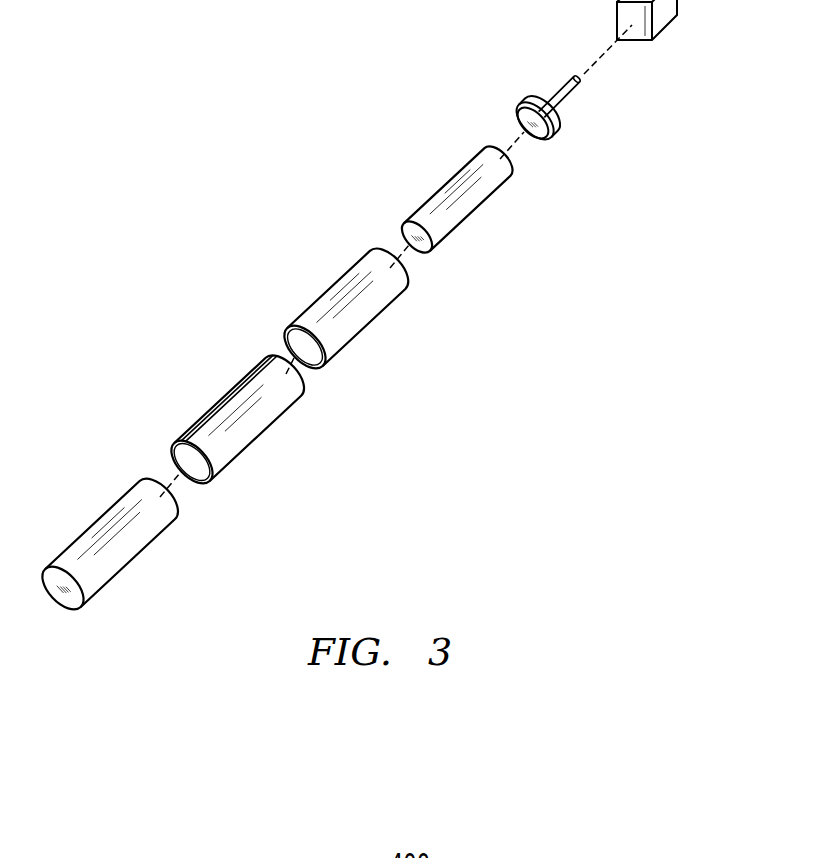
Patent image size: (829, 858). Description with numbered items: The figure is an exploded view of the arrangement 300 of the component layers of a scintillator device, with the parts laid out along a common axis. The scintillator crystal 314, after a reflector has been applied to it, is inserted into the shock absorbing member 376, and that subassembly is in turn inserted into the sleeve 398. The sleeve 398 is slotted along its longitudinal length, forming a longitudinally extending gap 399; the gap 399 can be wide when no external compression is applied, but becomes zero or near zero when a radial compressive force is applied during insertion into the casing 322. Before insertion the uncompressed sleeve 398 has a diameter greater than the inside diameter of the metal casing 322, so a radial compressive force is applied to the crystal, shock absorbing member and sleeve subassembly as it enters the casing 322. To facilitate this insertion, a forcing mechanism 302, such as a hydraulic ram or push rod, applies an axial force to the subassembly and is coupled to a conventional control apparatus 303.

The arrangement of the component layers of the scintillator device 300 is at (363, 110).
The forcing mechanism 302 is at (521, 103).
The control apparatus 303 is at (667, 25).
The scintillator crystal 314 is at (440, 185).
The shock absorbing member 376 is at (322, 291).
The sleeve 398 is at (226, 390).
The longitudinally extending gap 399 is at (220, 478).
The casing 322 is at (110, 500).